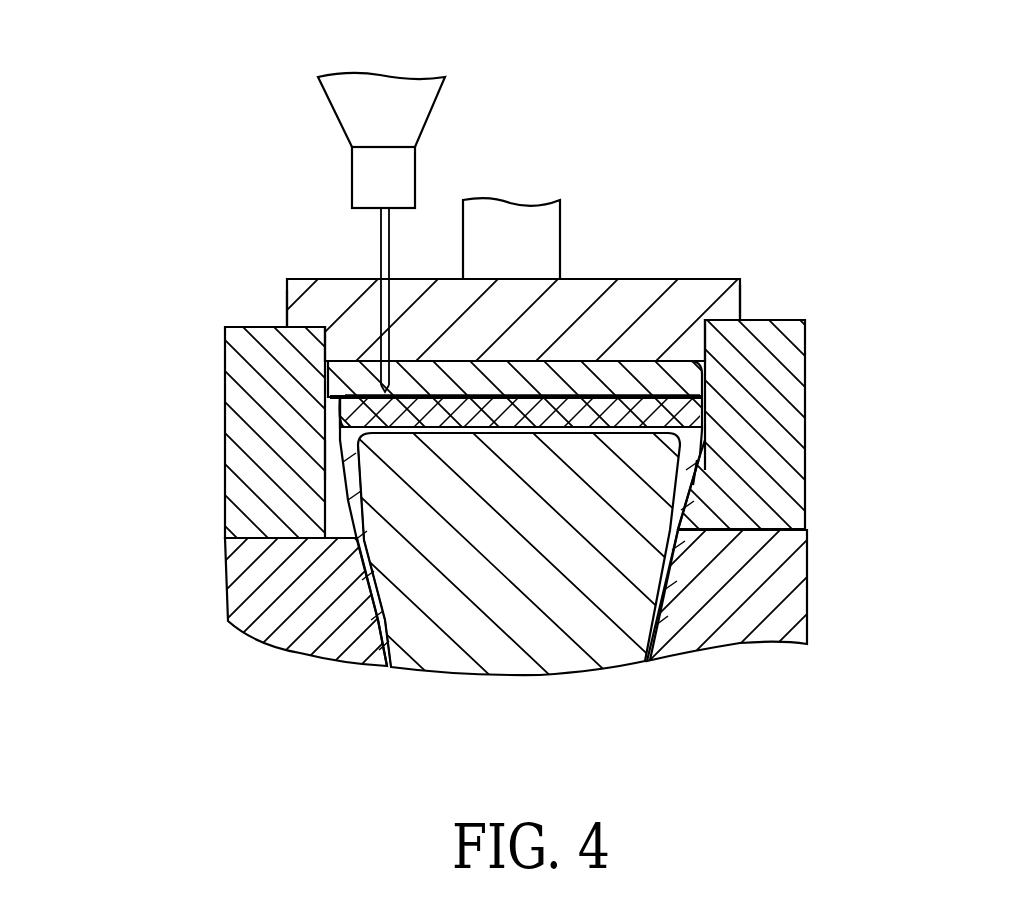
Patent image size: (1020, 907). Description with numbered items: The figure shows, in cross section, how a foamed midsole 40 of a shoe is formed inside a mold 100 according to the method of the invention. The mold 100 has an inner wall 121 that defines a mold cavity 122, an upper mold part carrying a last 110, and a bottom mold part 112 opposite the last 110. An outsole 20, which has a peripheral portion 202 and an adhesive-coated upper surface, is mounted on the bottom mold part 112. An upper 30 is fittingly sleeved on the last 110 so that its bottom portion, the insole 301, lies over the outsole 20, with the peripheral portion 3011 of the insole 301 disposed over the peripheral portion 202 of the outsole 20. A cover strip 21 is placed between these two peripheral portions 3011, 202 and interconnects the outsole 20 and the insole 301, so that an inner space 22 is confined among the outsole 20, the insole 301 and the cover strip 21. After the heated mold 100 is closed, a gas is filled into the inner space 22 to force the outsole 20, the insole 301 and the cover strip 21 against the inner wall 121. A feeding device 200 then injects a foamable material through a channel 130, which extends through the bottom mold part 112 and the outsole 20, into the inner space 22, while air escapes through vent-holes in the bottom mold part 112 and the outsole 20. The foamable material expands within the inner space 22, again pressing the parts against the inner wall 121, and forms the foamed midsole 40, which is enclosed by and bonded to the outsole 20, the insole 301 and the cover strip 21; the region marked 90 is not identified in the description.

The mold 100 is at (250, 304).
The last 110 is at (573, 620).
The bottom mold part 112 is at (732, 302).
The inner wall 121 is at (700, 478).
The mold cavity 122 is at (330, 462).
The channel 130 is at (328, 292).
The outsole 20 is at (566, 352).
The cover strip 21 is at (706, 404).
The inner space 22 is at (324, 370).
The feeding device 200 is at (439, 94).
The peripheral portion 202 is at (700, 393).
The upper 30 is at (367, 592).
The insole 301 is at (655, 395).
The peripheral portion 3011 is at (700, 466).
The foamed midsole 40 is at (458, 400).
The gap layer 90 is at (633, 358).